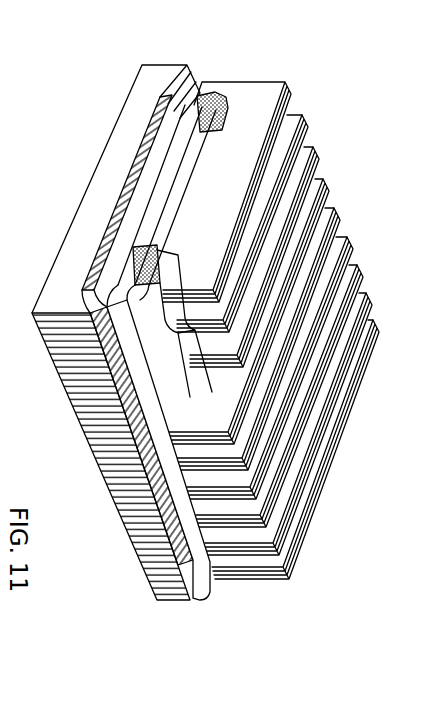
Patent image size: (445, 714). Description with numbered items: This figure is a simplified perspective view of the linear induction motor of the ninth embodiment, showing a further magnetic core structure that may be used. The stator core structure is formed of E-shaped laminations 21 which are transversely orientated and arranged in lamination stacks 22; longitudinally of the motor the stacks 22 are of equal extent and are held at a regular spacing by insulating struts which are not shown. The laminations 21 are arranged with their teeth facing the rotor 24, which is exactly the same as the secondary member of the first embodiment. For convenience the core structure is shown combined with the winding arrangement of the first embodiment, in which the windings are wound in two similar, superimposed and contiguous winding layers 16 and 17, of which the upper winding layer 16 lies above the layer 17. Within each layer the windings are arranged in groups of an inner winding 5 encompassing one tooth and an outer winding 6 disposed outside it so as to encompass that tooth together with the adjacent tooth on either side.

The inner winding 5 is at (185, 170).
The outer winding 6 is at (108, 232).
The upper winding layer 16 is at (161, 379).
The winding layer 17 is at (143, 361).
The E-shaped lamination 21 is at (302, 143).
The lamination stack 22 is at (325, 162).
The rotor 24 is at (199, 54).